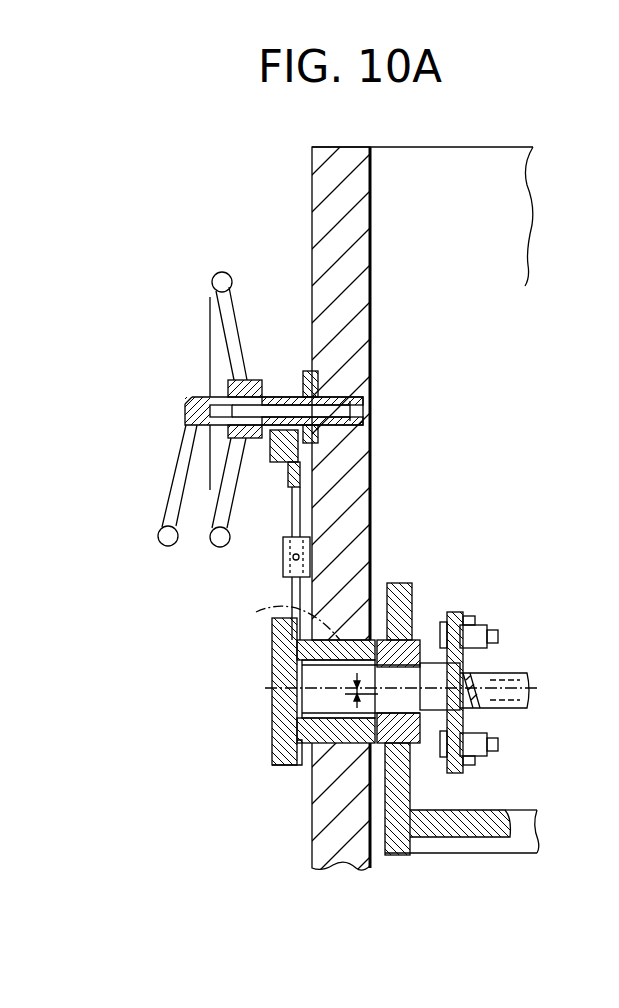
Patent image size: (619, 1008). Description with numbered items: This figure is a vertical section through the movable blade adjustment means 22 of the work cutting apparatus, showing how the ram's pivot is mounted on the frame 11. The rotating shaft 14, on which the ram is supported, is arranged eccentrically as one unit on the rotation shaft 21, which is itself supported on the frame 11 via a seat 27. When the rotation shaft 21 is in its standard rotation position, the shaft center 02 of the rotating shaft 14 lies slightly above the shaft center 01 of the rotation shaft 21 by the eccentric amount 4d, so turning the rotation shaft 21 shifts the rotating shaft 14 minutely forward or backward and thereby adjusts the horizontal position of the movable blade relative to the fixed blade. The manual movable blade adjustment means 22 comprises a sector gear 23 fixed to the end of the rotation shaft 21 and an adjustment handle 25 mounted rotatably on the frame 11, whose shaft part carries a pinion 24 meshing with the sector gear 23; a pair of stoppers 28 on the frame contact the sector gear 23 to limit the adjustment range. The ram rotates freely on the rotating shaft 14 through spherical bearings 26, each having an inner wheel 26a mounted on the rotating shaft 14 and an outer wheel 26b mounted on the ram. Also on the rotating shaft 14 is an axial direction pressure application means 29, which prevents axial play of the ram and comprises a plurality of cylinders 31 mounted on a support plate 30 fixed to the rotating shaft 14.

The frame 11 is at (312, 210).
The movable blade adjustment means 22 is at (181, 371).
The adjustment handle 25 is at (214, 277).
The pinion 24 is at (280, 395).
The sector gear 23 is at (278, 463).
The seat 27 is at (298, 605).
The stoppers 28 is at (307, 555).
The shaft center of the rotating shaft 02 is at (352, 655).
The rotation shaft 21 is at (302, 687).
The shaft center of the rotation shaft 01 is at (347, 697).
The eccentric amount 4d is at (337, 697).
The bearings 26 is at (416, 638).
The inner wheel 26a is at (425, 727).
The outer wheel 26b is at (430, 795).
The support plate 30 is at (457, 612).
The cylinders 31 is at (478, 620).
The axial direction pressure application means 29 is at (504, 747).
The rotating shaft 14 is at (512, 677).